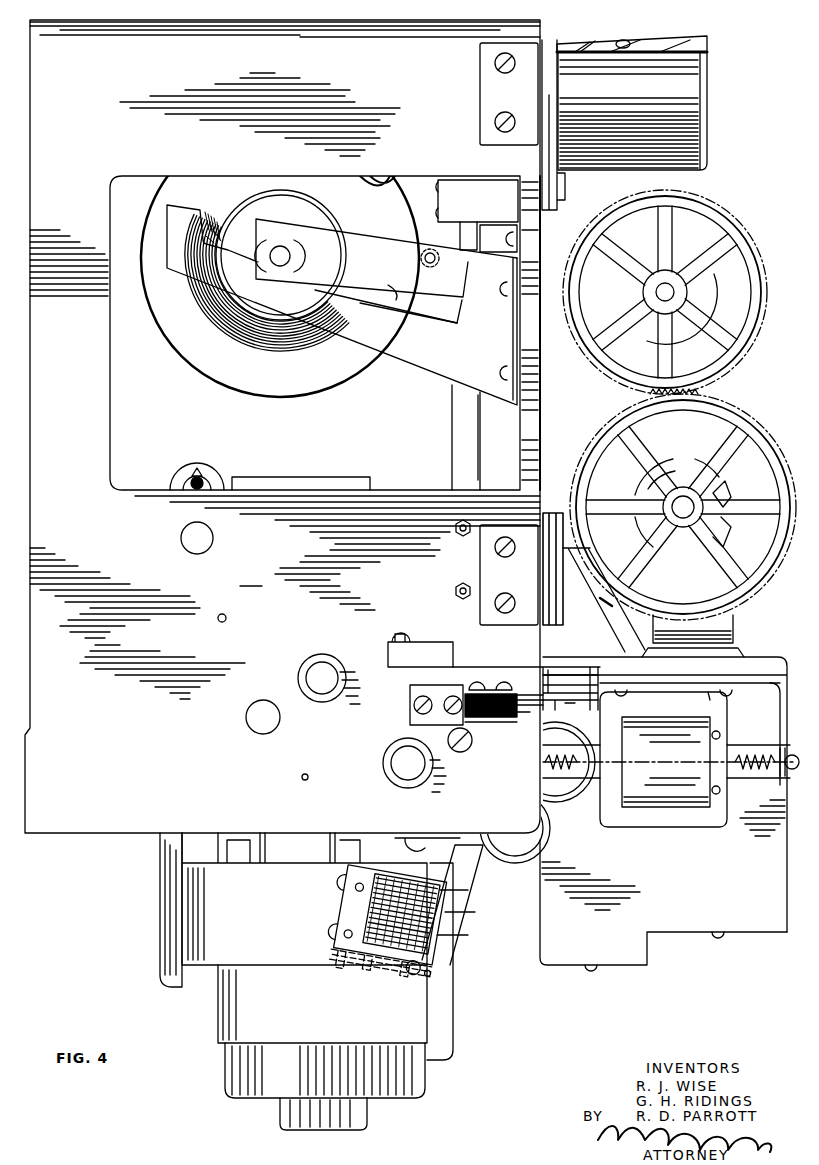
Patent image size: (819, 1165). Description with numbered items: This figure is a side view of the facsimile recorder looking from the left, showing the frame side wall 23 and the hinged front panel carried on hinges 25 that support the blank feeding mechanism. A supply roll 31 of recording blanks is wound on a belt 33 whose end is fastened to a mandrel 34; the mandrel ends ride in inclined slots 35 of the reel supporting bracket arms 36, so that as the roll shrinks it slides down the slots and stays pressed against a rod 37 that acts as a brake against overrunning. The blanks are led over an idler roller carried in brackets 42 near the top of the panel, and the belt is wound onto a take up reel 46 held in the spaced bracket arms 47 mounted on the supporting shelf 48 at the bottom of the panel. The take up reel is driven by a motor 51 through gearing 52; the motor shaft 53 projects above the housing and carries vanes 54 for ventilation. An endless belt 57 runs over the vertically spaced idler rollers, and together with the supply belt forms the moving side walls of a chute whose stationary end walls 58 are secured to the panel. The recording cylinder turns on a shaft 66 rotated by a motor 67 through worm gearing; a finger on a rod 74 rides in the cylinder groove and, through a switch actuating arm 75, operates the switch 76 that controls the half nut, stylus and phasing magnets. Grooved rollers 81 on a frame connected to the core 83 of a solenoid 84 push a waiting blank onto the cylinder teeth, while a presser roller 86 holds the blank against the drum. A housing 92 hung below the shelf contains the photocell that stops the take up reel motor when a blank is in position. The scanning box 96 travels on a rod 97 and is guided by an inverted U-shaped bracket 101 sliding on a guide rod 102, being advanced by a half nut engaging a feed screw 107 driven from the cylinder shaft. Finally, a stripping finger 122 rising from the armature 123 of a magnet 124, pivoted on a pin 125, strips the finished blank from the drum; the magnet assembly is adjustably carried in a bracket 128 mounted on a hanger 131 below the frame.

The side wall 23 is at (282, 426).
The hinge 25 is at (480, 96).
The supply roll 31 is at (292, 390).
The belt 33 is at (604, 600).
The mandrel 34 is at (281, 250).
The inclined slot 35 is at (394, 289).
The reel supporting bracket arm 36 is at (418, 355).
The rod 37 is at (440, 261).
The bracket 42 is at (485, 207).
The belt take up reel 46 is at (700, 472).
The bracket arm 47 is at (722, 627).
The supporting shelf 48 is at (756, 660).
The motor 51 is at (692, 183).
The gearing 52 is at (725, 408).
The motor shaft 53 is at (623, 40).
The vane 54 is at (590, 42).
The endless belt 57 is at (452, 455).
The end wall 58 is at (510, 464).
The shaft 66 is at (392, 772).
The motor 67 is at (290, 1014).
The rod 74 is at (418, 642).
The switch actuating arm 75 is at (487, 665).
The switch 76 is at (527, 718).
The grooved roller 81 is at (568, 800).
The core 83 is at (749, 758).
The solenoid 84 is at (666, 797).
The presser roller 86 is at (552, 840).
The housing 92 is at (700, 878).
The scanning box 96 is at (327, 480).
The rod 97 is at (260, 733).
The inverted U-shaped bracket 101 is at (180, 476).
The guide rod 102 is at (213, 543).
The feed screw 107 is at (321, 670).
The stripping finger 122 is at (480, 858).
The armature 123 is at (458, 914).
The magnet 124 is at (356, 880).
The pin 125 is at (410, 968).
The bracket 128 is at (278, 955).
The hanger 131 is at (166, 936).